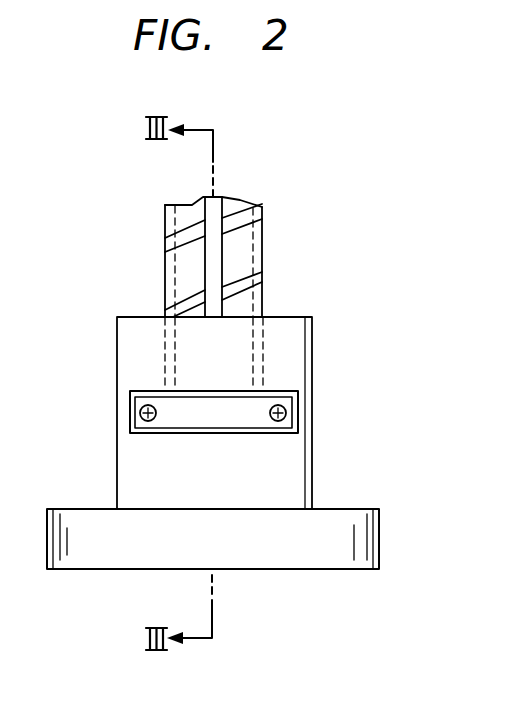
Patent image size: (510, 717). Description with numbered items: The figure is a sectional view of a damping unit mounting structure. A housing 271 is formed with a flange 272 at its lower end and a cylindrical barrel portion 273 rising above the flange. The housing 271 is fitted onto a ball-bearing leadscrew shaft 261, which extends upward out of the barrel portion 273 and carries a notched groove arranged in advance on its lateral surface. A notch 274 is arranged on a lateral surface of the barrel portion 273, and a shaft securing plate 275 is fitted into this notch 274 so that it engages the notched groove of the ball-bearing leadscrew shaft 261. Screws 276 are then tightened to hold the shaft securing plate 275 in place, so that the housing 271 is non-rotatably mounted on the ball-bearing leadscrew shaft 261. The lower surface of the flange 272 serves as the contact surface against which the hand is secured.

The housing 271 is at (108, 311).
The ball-bearing leadscrew shaft 261 is at (264, 231).
The flange 272 is at (379, 540).
The cylindrical barrel portion 273 is at (306, 476).
The notch 274 is at (298, 424).
The shaft securing plate 275 is at (283, 403).
The screws 276 is at (140, 413).